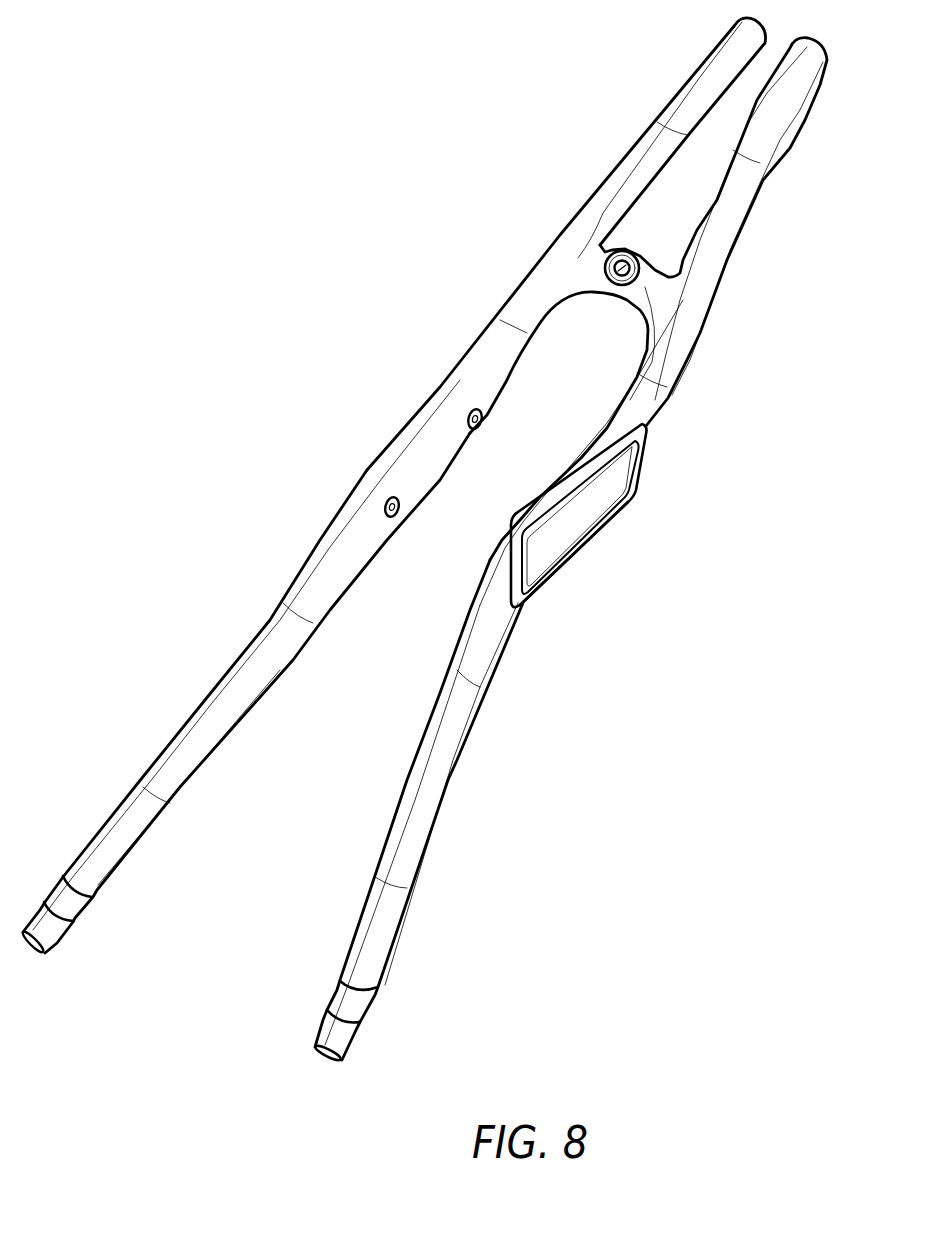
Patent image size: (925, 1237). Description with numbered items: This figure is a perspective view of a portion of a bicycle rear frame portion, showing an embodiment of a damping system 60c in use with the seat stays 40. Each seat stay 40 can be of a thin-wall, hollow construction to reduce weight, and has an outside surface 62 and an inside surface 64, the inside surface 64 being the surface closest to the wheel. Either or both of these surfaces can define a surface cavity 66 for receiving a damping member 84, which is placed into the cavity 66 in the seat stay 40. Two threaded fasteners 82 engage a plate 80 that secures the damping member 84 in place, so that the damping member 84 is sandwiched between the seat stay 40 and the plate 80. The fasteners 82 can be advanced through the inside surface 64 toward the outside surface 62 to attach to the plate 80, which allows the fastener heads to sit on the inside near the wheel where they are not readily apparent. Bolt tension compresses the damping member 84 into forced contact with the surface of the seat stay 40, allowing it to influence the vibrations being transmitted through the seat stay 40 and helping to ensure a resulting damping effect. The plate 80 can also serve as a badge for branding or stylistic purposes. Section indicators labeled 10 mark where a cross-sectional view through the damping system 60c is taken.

The section line / cross-section indicator 10 is at (405, 403).
The seat stay 40 is at (537, 272).
The damping system 60c is at (758, 508).
The outside surface 62 is at (455, 783).
The inside surface 64 is at (217, 730).
The surface cavity 66 is at (646, 438).
The plate 80 is at (573, 530).
The threaded fasteners 82 is at (481, 423).
The damping member 84 is at (535, 600).